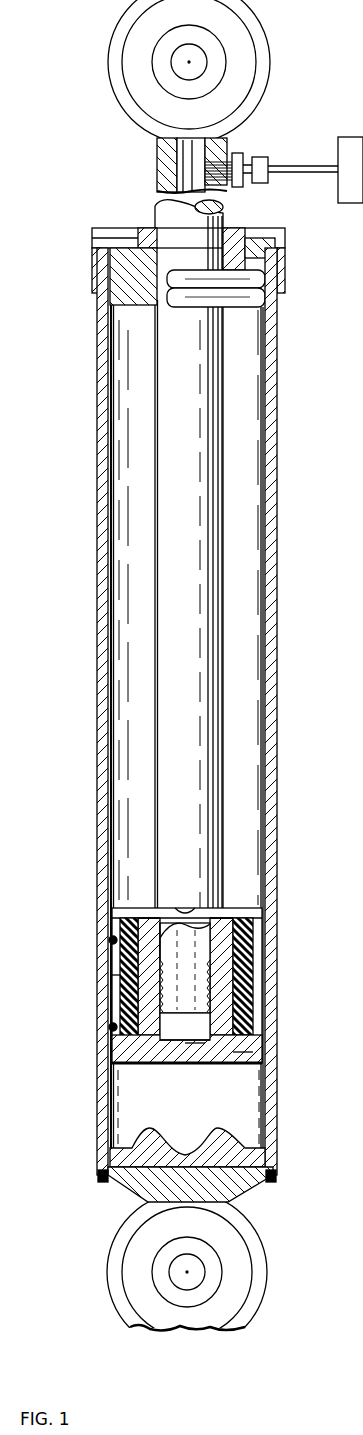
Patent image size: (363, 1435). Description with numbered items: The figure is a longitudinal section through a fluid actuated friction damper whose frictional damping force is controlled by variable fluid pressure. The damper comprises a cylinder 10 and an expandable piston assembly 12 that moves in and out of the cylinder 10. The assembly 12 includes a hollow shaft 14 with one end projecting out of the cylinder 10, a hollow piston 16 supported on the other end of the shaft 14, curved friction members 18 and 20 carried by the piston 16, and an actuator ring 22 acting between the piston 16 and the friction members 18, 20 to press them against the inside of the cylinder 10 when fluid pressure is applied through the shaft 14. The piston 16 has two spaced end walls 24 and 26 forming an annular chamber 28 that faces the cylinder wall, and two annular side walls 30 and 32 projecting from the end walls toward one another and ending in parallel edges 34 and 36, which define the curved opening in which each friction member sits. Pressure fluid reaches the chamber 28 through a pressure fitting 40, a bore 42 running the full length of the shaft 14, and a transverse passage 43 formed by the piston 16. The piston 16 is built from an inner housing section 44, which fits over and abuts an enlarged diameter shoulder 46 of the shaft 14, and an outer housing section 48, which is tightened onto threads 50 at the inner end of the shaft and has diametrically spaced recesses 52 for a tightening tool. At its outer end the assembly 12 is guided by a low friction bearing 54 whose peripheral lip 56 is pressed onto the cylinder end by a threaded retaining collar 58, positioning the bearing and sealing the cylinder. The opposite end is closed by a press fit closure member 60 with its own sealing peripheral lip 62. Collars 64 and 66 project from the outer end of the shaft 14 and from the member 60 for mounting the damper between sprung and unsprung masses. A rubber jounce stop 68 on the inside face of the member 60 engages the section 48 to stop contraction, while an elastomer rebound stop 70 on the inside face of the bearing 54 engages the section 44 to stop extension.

The cylinder 10 is at (277, 522).
The expandable piston assembly 12 is at (248, 653).
The hollow shaft 14 is at (198, 588).
The hollow piston 16 is at (233, 1065).
The curved friction member 18 is at (113, 983).
The curved friction member 20 is at (267, 973).
The actuator ring 22 is at (243, 1005).
The end wall 24 is at (225, 912).
The end wall 26 is at (148, 1053).
The annular chamber 28 is at (143, 912).
The annular side wall 30 is at (257, 932).
The annular side wall 32 is at (257, 1045).
The edge 34 is at (111, 938).
The edge 36 is at (111, 1030).
The pressure fitting 40 is at (258, 153).
The bore 42 is at (190, 170).
The transverse passage 43 is at (220, 1025).
The inner housing section 44 is at (162, 935).
The enlarged diameter shoulder 46 is at (185, 912).
The outer housing section 48 is at (177, 1042).
The threads 50 is at (170, 987).
The recess 52 is at (187, 1068).
The bearing 54 is at (286, 248).
The peripheral lip 56 is at (104, 232).
The threaded retaining collar 58 is at (285, 270).
The closure member 60 is at (223, 1190).
The peripheral lip 62 is at (268, 1182).
The collar 64 is at (270, 50).
The collar 66 is at (268, 1268).
The rubber jounce stop 68 is at (143, 1148).
The rebound stop 70 is at (276, 305).